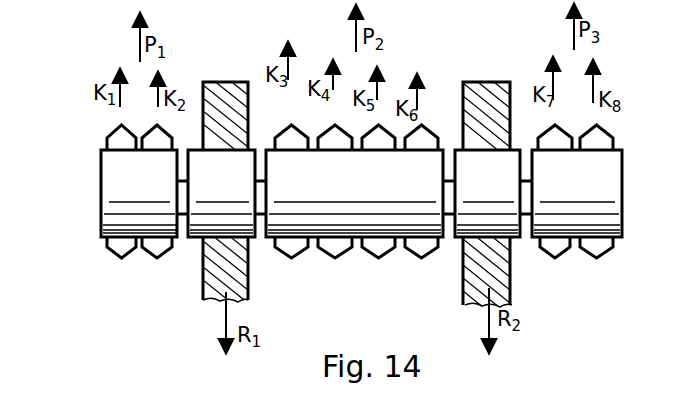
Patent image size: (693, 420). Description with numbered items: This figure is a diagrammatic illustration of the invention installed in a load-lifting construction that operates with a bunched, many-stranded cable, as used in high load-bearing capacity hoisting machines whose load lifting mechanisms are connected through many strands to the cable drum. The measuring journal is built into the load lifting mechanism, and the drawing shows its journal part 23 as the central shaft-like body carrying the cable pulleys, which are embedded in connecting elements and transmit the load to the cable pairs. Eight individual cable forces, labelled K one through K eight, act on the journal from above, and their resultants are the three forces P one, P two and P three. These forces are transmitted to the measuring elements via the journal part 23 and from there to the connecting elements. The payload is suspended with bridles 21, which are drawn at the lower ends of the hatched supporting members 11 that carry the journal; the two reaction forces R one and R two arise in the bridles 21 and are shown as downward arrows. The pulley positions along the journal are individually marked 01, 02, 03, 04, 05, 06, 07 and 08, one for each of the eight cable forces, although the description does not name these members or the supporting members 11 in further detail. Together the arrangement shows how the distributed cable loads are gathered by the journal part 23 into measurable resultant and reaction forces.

The pole piece 01 is at (113, 143).
The pole piece 02 is at (157, 247).
The pole piece 03 is at (291, 250).
The pole piece 04 is at (335, 250).
The pole piece 05 is at (378, 250).
The pole piece 06 is at (421, 250).
The pole piece 07 is at (553, 250).
The pole piece 08 is at (606, 252).
The support (bearing) 11 is at (365, 186).
The bridles 21 is at (212, 290).
The journal part 23 is at (120, 183).